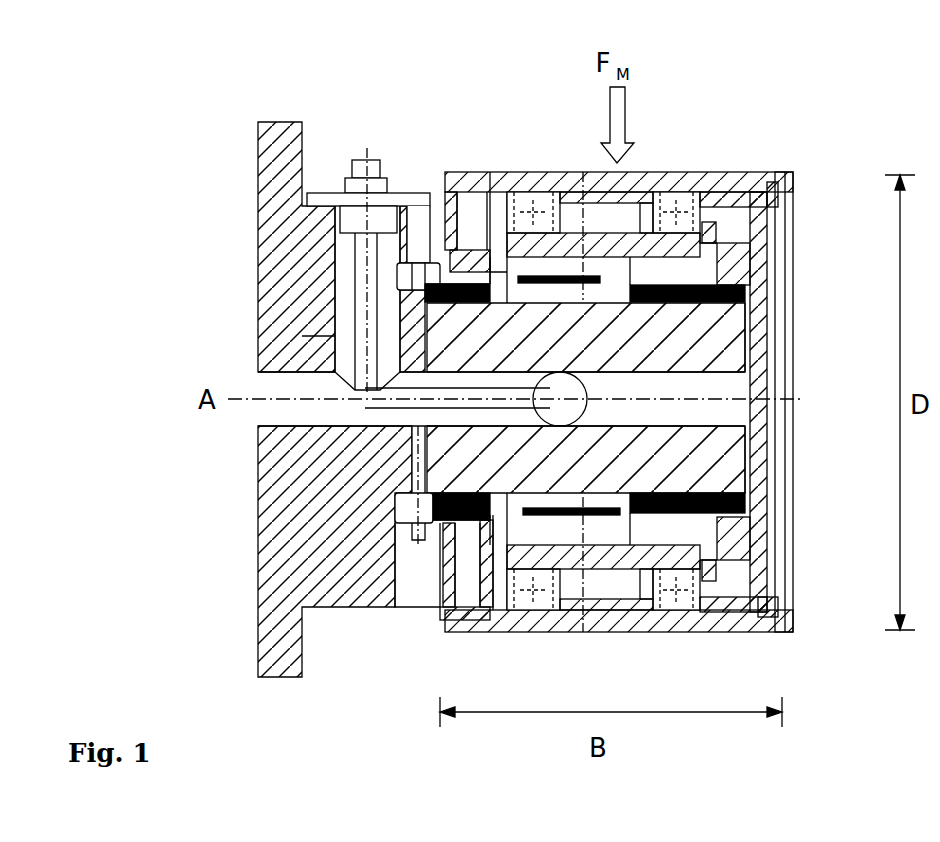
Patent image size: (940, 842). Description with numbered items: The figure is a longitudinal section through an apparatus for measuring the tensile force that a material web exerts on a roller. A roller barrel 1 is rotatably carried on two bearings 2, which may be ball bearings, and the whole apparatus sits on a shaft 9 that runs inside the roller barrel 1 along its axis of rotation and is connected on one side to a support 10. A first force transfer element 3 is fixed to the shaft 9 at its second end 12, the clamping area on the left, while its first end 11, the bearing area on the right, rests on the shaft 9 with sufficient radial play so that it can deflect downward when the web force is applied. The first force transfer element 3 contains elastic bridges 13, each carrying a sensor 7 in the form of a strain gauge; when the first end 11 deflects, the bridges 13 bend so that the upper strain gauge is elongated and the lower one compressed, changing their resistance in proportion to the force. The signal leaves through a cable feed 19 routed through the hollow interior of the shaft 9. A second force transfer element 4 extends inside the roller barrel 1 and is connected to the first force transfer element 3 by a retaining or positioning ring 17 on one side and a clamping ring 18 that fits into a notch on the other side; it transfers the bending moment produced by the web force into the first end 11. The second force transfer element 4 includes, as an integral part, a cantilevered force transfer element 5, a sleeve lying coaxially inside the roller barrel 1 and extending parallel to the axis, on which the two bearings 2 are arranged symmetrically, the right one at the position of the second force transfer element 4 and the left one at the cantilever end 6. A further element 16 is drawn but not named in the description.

The roller barrel 1 is at (742, 172).
The bearings 2 is at (525, 172).
The first force transfer element 3 is at (752, 293).
The second force transfer element 4 is at (717, 250).
The cantilevered force transfer element 5 is at (567, 172).
The cantilever end 6 is at (502, 170).
The sensor 7 is at (583, 172).
The shaft 9 is at (710, 345).
The support 10 is at (258, 252).
The first end 11 is at (765, 172).
The second end 12 is at (408, 180).
The bridge 13 is at (458, 172).
The nut 16 is at (398, 293).
The retaining or positioning ring 17 is at (652, 172).
The clamping ring 18 is at (735, 272).
The cable feed 19 is at (335, 336).